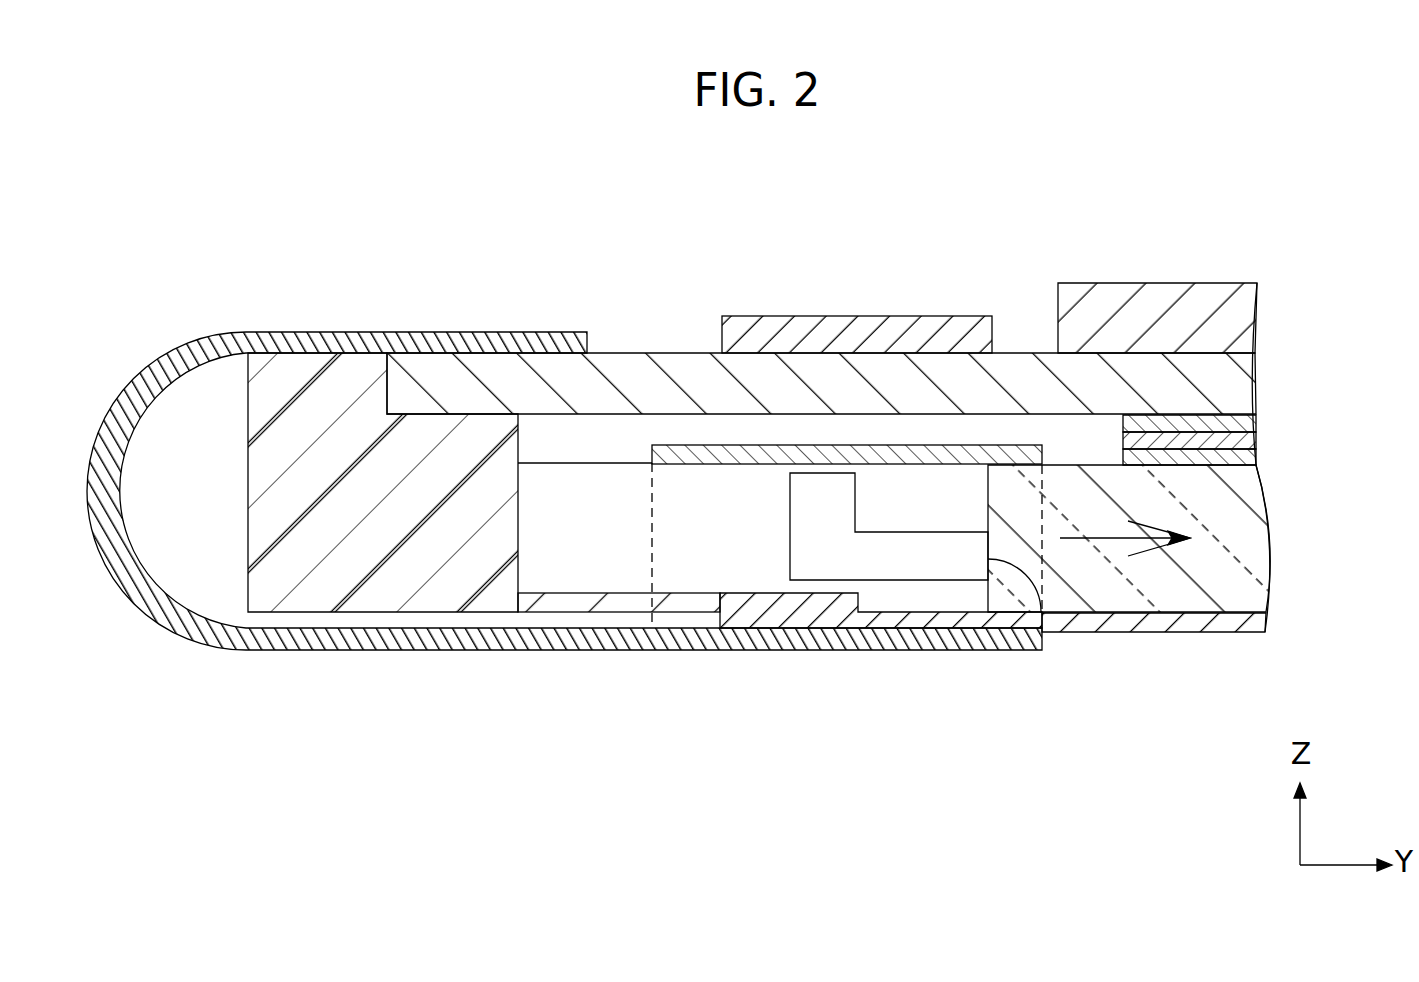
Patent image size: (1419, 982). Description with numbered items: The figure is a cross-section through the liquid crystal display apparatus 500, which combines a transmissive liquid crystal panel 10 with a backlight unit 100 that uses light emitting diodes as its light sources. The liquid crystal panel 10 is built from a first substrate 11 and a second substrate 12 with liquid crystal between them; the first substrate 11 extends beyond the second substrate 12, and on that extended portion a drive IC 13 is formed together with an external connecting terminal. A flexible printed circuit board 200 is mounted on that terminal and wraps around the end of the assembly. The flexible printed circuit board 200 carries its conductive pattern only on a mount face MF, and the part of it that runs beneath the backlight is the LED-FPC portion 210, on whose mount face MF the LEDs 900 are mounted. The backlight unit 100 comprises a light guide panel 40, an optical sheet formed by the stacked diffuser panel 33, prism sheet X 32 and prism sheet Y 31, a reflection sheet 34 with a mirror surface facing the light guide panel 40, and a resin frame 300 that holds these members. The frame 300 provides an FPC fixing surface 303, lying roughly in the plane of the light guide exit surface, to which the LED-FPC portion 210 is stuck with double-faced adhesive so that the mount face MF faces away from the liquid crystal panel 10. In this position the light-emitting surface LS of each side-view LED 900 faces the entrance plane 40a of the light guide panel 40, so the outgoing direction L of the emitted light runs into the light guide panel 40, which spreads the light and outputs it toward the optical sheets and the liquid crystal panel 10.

The liquid crystal display apparatus 500 is at (716, 489).
The flexible printed circuit board 200 is at (186, 350).
The frame 300 is at (368, 592).
The FPC fixing surface 303 is at (628, 463).
The liquid crystal panel 10 is at (866, 317).
The first substrate 11 is at (1260, 393).
The second substrate 12 is at (1258, 296).
The drive IC 13 is at (806, 333).
The prism sheet Y 31 is at (1258, 421).
The prism sheet X 32 is at (1256, 438).
The diffuser panel 33 is at (1258, 456).
The LED-FPC portion 210 is at (716, 454).
The mount face MF is at (733, 466).
The backlight unit 100 is at (1068, 656).
The light guide panel 40 is at (1268, 553).
The entrance plane 40a is at (980, 595).
The reflection sheet 34 is at (1268, 625).
The LED 900 is at (882, 568).
The light-emitting surface LS is at (1042, 612).
The outgoing direction L is at (1138, 540).